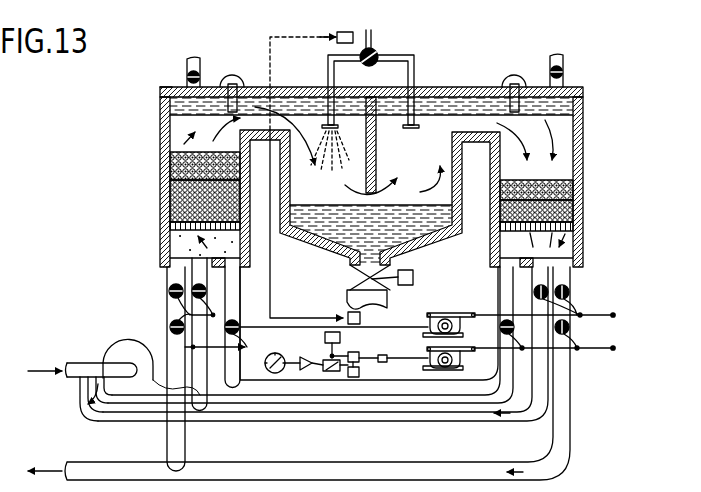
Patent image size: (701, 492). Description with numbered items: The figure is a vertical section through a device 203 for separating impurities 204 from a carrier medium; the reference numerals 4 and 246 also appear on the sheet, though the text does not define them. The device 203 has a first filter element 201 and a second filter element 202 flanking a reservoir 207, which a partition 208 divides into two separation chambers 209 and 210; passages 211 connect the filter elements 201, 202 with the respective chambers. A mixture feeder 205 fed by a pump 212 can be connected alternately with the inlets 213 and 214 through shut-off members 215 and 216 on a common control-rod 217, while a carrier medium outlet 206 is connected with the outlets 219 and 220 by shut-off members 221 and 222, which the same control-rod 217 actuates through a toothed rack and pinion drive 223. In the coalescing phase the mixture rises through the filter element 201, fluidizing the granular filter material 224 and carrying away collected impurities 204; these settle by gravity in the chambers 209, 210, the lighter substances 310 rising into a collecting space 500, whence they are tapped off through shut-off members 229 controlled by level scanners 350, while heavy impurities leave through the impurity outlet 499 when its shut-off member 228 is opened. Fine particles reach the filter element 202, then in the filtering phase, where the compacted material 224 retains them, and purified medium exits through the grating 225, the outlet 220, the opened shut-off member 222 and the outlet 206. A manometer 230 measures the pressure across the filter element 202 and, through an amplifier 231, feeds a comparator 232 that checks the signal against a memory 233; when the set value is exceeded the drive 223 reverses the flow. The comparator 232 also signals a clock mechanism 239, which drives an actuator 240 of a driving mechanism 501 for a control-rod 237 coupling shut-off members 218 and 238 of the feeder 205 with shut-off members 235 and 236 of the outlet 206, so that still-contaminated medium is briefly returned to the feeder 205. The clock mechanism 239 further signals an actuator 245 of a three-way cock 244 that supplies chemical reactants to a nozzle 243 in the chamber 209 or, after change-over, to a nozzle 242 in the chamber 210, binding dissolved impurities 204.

The housing 4 is at (202, 123).
The first filter element 201 is at (158, 162).
The second filter element 202 is at (586, 184).
The device 203 is at (536, 66).
The impurities 204 is at (173, 153).
The mixture feeder 205 is at (82, 362).
The carrier medium outlet 206 is at (90, 462).
The reservoir 207 is at (466, 209).
The partition 208 is at (377, 151).
The separation chamber 209 is at (306, 125).
The separation chamber 210 is at (437, 142).
The passages 211 is at (266, 122).
The pump 212 is at (125, 348).
The inlet 213 is at (263, 272).
The inlet 214 is at (512, 272).
The shut-off member 215 is at (239, 331).
The shut-off member 216 is at (500, 320).
The control-rod 217 is at (587, 349).
The shut-off member 218 is at (194, 287).
The outlet 219 is at (172, 250).
The outlet 220 is at (572, 247).
The shut-off member 221 is at (171, 326).
The shut-off member 222 is at (571, 327).
The toothed rack and pinion drive 223 is at (446, 371).
The granular filter material 224 is at (172, 196).
The grating 225 is at (172, 225).
The shut-off member 228 is at (396, 272).
The shut-off members 229 is at (190, 60).
The manometer 230 is at (273, 374).
The amplifier 231 is at (306, 371).
The comparator 232 is at (328, 360).
The memory 233 is at (353, 378).
The shut-off member 235 is at (170, 290).
The shut-off member 236 is at (570, 293).
The control-rod 237 is at (500, 327).
The shut-off member 238 is at (548, 289).
The clock mechanism 239 is at (340, 338).
The actuator 240 is at (348, 316).
The nozzle 242 is at (414, 124).
The nozzle 243 is at (326, 124).
The three-way cock 244 is at (376, 50).
The actuator 245 is at (345, 32).
The gas opening 246 is at (259, 120).
The lighter substances 310 is at (160, 92).
The level scanners 350 is at (228, 78).
The impurity outlet 499 is at (349, 293).
The collecting space 500 is at (176, 107).
The driving mechanism 501 is at (461, 299).